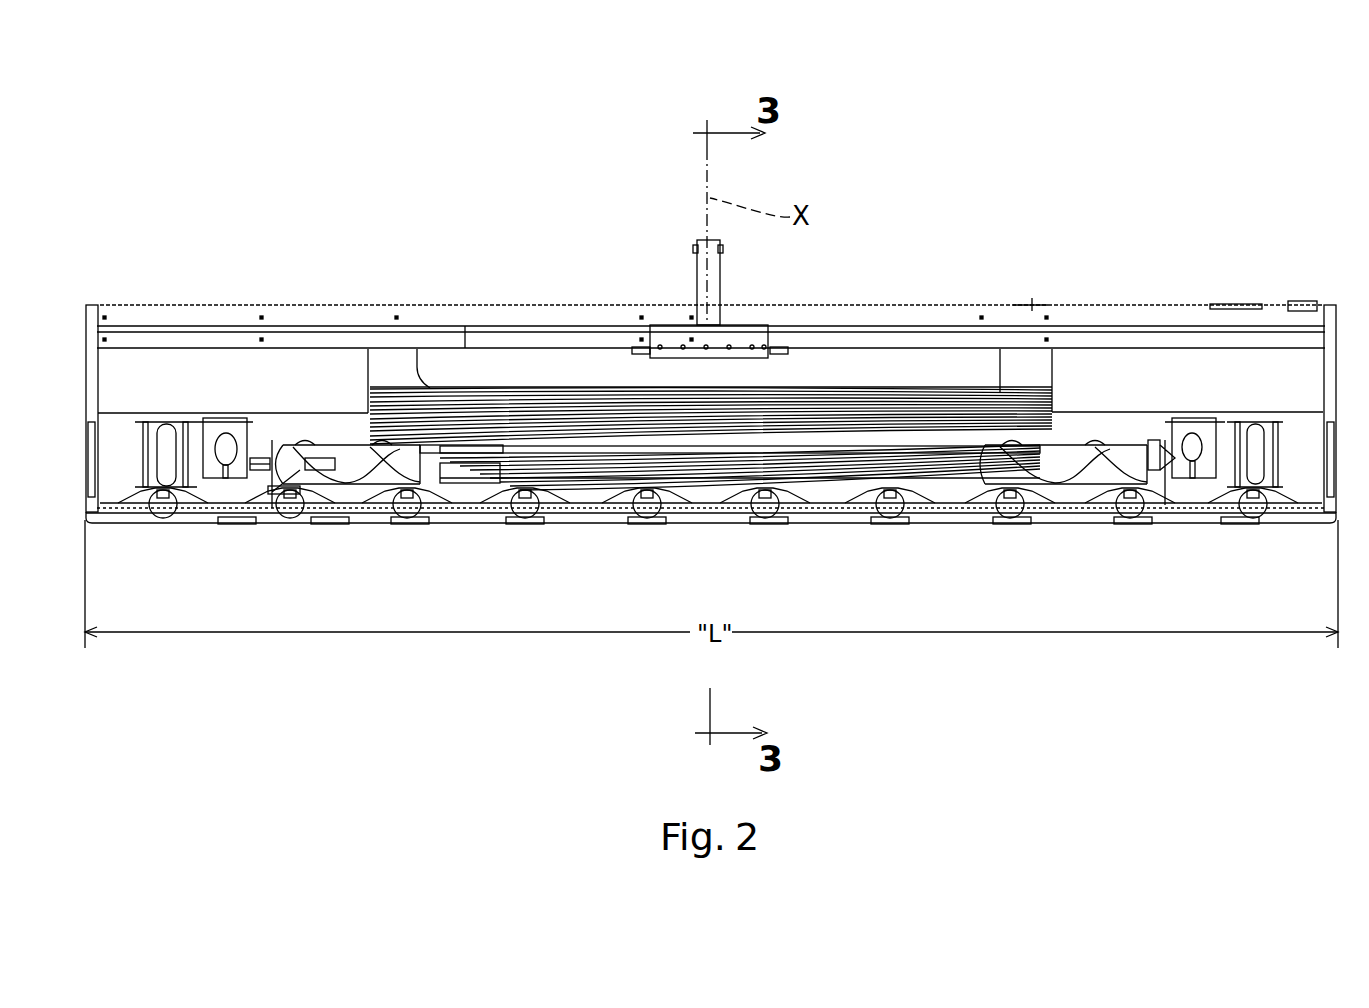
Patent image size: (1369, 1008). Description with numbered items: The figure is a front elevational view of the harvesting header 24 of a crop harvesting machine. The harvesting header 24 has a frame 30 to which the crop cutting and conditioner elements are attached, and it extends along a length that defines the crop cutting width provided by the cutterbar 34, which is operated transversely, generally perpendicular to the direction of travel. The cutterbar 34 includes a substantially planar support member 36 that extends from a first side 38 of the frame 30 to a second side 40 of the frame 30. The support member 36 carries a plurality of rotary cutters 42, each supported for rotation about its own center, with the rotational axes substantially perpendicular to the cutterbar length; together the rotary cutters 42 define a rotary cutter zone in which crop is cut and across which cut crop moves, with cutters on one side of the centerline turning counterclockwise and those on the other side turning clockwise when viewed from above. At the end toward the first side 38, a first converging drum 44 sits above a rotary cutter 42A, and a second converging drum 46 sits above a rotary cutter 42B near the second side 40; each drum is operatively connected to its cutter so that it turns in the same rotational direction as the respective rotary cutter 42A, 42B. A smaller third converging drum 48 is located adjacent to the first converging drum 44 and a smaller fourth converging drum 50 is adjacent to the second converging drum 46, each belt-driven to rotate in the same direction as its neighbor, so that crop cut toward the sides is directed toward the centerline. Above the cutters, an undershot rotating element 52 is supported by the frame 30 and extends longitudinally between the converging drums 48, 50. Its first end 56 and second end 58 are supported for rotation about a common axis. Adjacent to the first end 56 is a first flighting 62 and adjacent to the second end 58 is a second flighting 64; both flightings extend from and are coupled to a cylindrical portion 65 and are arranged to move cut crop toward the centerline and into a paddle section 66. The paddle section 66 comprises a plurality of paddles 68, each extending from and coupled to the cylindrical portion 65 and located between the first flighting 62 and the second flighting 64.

The harvesting header 24 is at (1022, 172).
The frame 30 is at (447, 313).
The cutterbar 34 is at (353, 523).
The support member 36 is at (698, 525).
The first side 38 is at (56, 350).
The second side 40 is at (1345, 365).
The rotary cutters 42 is at (527, 490).
The rotary cutter 42A is at (150, 513).
The rotary cutter 42B is at (1255, 498).
The first converging drum 44 is at (152, 430).
The second converging drum 46 is at (1242, 428).
The third converging drum 48 is at (213, 423).
The fourth converging drum 50 is at (1180, 428).
The undershot rotating element 52 is at (336, 445).
The first end 56 is at (275, 490).
The second end 58 is at (1162, 462).
The first flighting 62 is at (300, 445).
The second flighting 64 is at (1123, 445).
The cylindrical portion 65 is at (318, 468).
The paddle section 66 is at (832, 480).
The paddles 68 is at (540, 477).